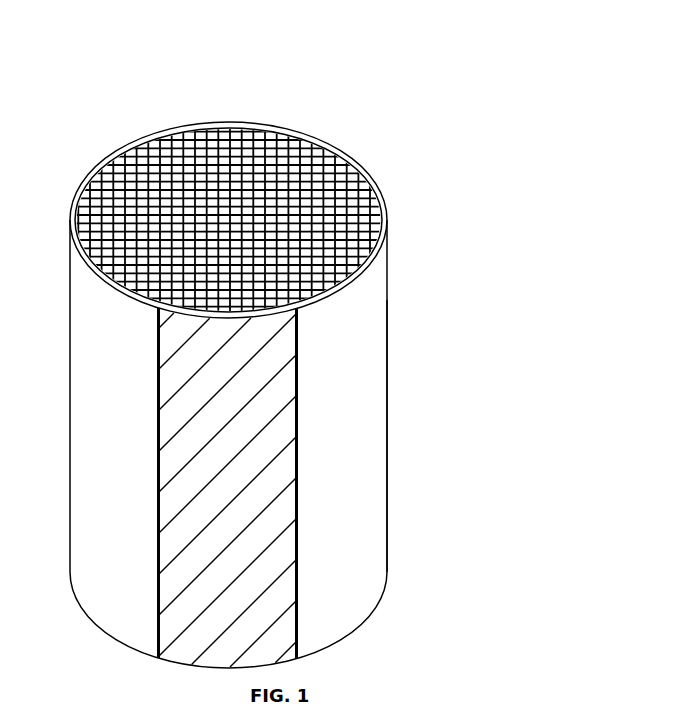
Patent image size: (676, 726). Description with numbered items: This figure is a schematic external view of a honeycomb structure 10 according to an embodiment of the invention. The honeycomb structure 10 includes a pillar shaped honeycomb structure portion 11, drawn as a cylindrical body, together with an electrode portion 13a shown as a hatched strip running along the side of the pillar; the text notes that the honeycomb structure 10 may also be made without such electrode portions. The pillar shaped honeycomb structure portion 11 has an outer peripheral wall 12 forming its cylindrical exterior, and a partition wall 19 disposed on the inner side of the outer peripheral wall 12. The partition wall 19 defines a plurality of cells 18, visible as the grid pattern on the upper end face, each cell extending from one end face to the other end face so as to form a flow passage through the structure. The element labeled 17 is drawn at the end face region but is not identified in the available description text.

The honeycomb structure 10 is at (285, 342).
The pillar shaped honeycomb structure portion 11 is at (285, 391).
The outer peripheral wall 12 is at (358, 445).
The electrode portion 13a is at (297, 395).
The end face 17 is at (385, 202).
The cell 18 is at (102, 222).
The partition wall 19 is at (125, 190).